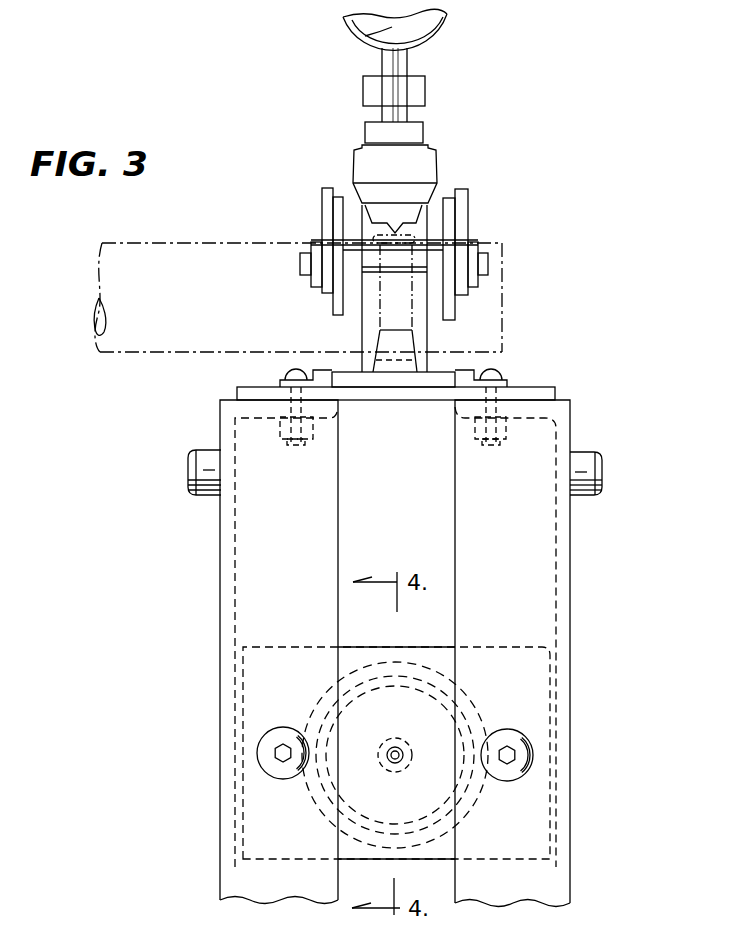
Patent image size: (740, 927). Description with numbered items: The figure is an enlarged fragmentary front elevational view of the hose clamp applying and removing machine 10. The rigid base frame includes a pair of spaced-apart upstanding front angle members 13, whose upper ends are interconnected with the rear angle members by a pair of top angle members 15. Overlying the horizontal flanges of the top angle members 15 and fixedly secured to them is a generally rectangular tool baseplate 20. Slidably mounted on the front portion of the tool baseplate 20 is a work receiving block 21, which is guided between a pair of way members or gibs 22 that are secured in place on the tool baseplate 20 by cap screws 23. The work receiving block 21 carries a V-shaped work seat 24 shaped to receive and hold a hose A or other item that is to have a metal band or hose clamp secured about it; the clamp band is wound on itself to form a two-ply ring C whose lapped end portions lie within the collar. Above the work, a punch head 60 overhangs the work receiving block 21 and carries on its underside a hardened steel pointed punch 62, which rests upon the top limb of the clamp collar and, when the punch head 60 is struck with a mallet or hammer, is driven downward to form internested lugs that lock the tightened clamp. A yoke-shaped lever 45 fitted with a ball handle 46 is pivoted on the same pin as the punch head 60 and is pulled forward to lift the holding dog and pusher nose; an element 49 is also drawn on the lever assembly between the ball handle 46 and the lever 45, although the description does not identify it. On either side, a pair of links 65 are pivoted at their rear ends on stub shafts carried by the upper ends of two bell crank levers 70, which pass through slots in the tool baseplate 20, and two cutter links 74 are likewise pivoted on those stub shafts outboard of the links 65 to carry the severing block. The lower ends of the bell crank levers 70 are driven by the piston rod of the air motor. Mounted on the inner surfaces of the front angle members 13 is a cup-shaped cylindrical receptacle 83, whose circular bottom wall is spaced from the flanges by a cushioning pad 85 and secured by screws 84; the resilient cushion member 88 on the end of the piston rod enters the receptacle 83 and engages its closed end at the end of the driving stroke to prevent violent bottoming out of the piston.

The hose clamp applying and removing machine 10 is at (606, 228).
The front angle members 13 is at (465, 518).
The top angle members 15 is at (272, 418).
The tool baseplate 20 is at (553, 388).
The work receiving block 21 is at (407, 380).
The way members or gibs 22 is at (507, 360).
The cap screws 23 is at (290, 375).
The V-shaped work seat 24 is at (430, 353).
The yoke-shaped lever 45 is at (377, 130).
The ball handle 46 is at (370, 32).
The block 49 is at (425, 93).
The punch head 60 is at (423, 173).
The pointed punch 62 is at (443, 222).
The links 65 is at (327, 300).
The bell crank levers 70 is at (343, 338).
The cutter links 74 is at (322, 205).
The cylindrical receptacle 83 is at (473, 695).
The screws 84 is at (395, 738).
The cushioning pad 85 is at (523, 647).
The cushion member 88 is at (372, 680).
The hose A is at (223, 240).
The two-ply ring C is at (380, 313).